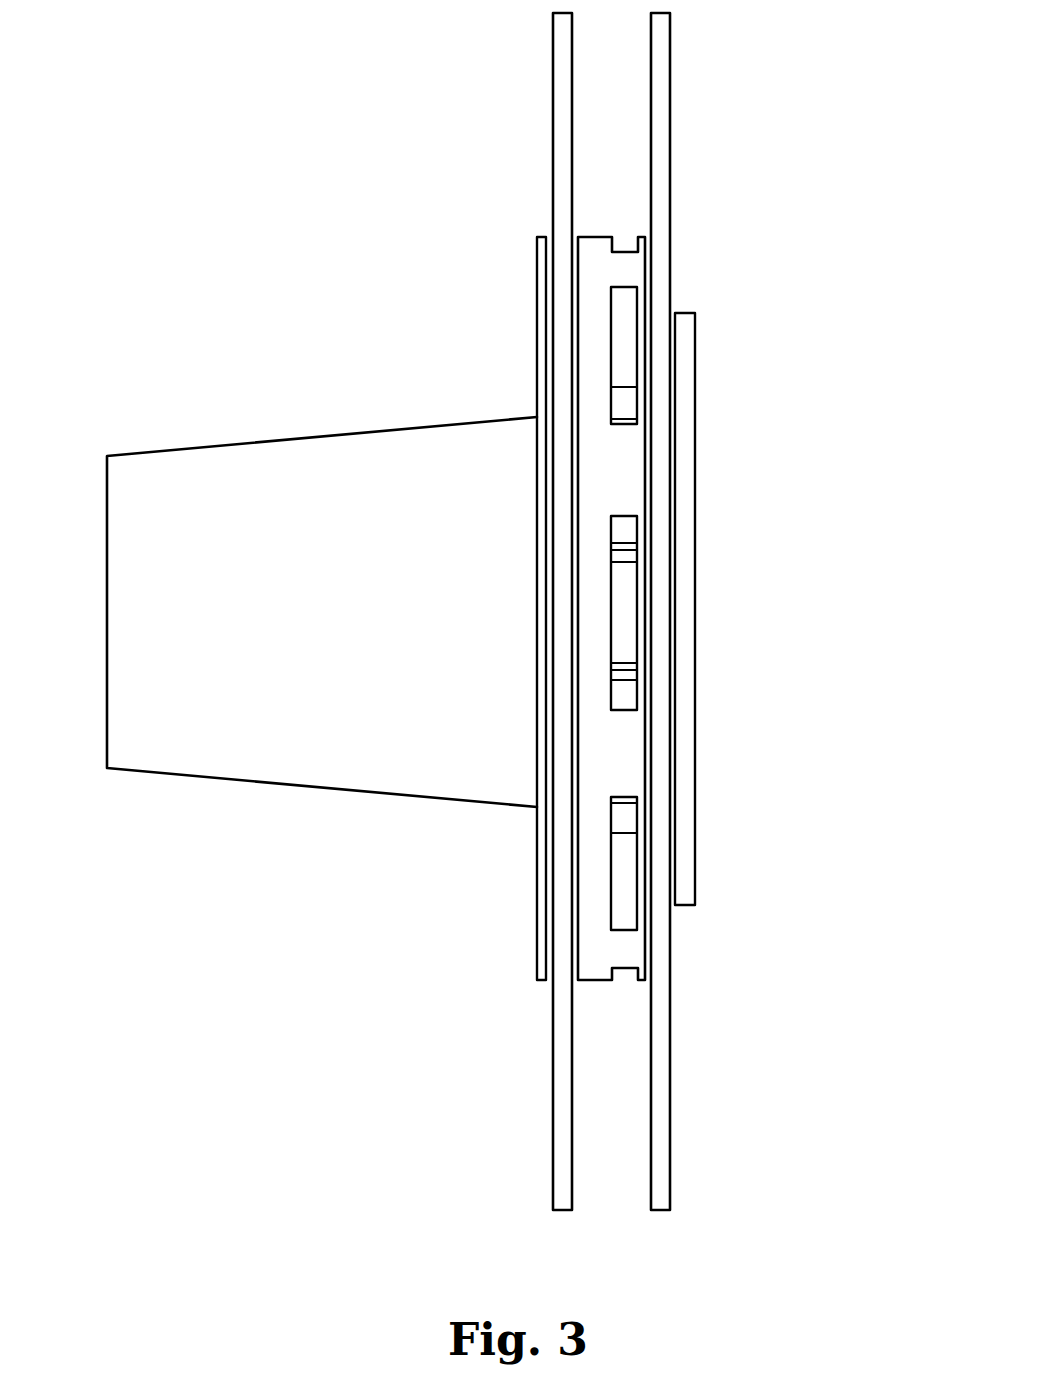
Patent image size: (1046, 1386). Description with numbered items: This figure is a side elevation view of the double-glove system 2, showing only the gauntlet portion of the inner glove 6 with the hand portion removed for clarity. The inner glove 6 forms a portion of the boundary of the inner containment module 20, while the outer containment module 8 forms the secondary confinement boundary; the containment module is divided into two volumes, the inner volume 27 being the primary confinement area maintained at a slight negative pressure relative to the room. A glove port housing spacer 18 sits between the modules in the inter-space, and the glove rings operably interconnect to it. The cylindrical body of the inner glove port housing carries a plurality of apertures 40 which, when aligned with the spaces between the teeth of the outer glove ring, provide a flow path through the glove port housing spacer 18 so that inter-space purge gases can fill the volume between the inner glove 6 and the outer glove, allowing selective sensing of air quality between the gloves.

The double-glove system 2 is at (352, 156).
The inner glove 6 is at (360, 470).
The outer containment module 8 is at (662, 67).
The glove port housing spacer 18 is at (618, 488).
The inner containment module 20 is at (562, 104).
The inner volume 27 is at (208, 920).
The apertures 40 is at (625, 362).